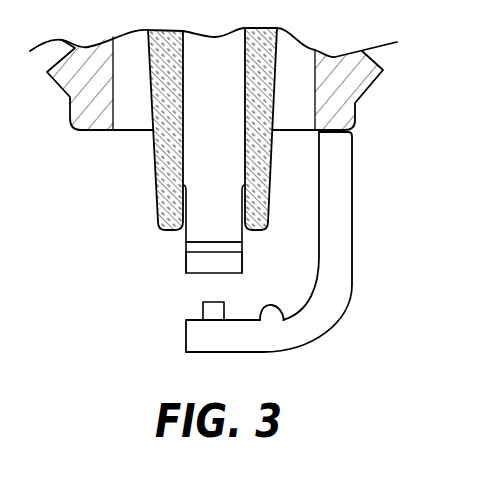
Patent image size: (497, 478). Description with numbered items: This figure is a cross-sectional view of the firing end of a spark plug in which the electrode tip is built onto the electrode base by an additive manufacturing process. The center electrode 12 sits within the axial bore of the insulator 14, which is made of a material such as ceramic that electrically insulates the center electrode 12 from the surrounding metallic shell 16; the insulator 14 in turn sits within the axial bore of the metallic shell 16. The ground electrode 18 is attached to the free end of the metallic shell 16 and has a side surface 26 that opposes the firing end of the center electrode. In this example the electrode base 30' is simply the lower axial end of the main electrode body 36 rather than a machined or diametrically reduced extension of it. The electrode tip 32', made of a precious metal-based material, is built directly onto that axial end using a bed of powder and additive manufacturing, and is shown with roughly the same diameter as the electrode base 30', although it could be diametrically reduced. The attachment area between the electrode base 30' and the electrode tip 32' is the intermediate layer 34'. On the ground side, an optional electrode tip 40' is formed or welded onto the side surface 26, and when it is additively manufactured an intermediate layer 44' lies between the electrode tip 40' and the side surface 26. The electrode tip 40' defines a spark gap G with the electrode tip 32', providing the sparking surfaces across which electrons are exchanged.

The center electrode 12 is at (228, 211).
The insulator 14 is at (265, 142).
The metallic shell 16 is at (353, 87).
The ground electrode 18 is at (340, 267).
The side surface 26 is at (277, 309).
The electrode base 30' is at (167, 241).
The electrode tip 32' is at (175, 270).
The intermediate layer 34' is at (245, 256).
The main electrode body 36 is at (200, 155).
The electrode tip 40' is at (160, 319).
The intermediate layer 44' is at (192, 341).
The spark gap G is at (229, 285).